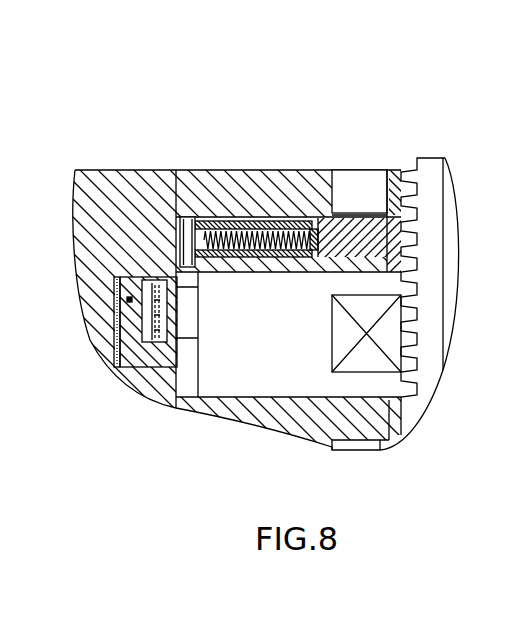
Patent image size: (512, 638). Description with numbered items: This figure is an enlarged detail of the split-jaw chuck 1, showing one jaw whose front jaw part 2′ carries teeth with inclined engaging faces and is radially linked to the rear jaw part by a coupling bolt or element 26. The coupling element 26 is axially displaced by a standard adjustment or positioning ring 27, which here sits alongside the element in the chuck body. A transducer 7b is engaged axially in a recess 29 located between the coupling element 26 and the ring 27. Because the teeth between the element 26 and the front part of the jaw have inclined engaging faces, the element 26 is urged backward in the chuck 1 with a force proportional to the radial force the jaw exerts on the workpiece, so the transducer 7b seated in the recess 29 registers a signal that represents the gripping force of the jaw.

The chuck 1 is at (127, 190).
The front jaw part 2′ is at (432, 167).
The coupling bolt 26 is at (233, 368).
The adjustment ring 27 is at (132, 316).
The recess 29 is at (130, 300).
The transducer 7b is at (118, 362).